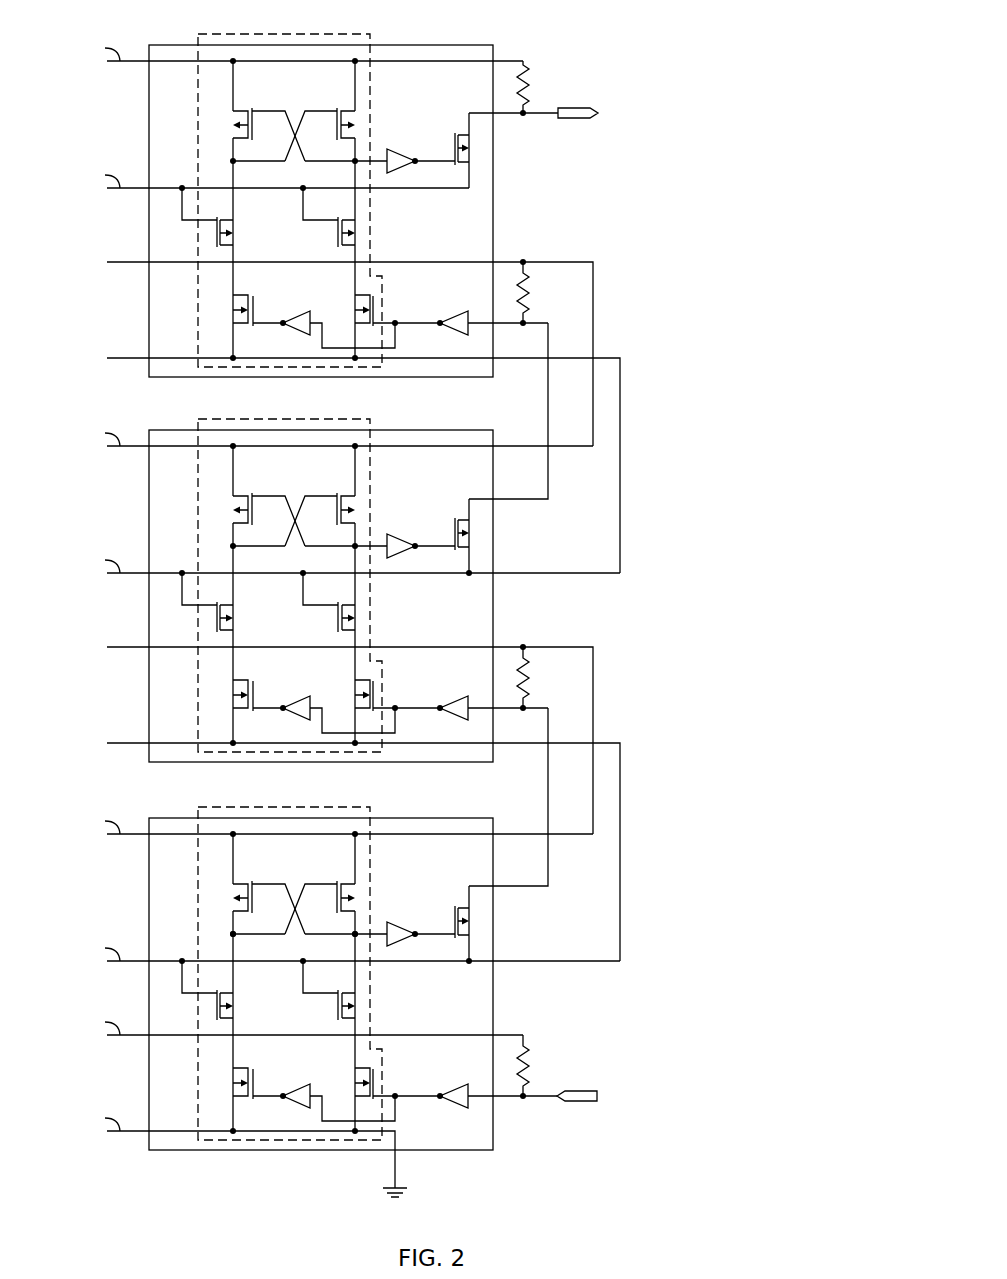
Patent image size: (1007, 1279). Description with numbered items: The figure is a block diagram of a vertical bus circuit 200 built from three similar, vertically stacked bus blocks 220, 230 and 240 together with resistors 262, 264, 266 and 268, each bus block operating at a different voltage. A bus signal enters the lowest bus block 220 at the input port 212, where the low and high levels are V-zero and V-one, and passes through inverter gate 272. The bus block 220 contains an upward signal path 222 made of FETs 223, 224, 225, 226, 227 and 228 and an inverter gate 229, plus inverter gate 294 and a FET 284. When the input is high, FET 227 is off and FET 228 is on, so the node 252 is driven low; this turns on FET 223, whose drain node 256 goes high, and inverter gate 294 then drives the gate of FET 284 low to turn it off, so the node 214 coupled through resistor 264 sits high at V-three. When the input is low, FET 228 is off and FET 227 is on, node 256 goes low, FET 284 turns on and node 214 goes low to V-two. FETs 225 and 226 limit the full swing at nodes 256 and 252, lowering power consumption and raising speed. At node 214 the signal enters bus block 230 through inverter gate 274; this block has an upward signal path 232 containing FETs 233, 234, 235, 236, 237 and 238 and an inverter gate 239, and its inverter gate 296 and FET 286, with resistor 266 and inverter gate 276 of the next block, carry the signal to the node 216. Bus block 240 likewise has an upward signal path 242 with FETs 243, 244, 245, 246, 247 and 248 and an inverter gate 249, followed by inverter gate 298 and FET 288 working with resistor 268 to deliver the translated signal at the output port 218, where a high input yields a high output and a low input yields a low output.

The vertical bus circuit 200 is at (680, 66).
The bus block 240 is at (455, 45).
The upward signal path 242 is at (351, 34).
The FET 244 is at (248, 104).
The FET 243 is at (343, 104).
The FET 246 is at (240, 234).
The FET 245 is at (367, 234).
The FET 248 is at (260, 308).
The FET 247 is at (347, 308).
The inverter gate 249 is at (298, 337).
The inverter gate 276 is at (466, 311).
The resistor 266 is at (530, 283).
The node 216 is at (527, 326).
The resistor 268 is at (529, 72).
The output port 218 is at (584, 108).
The FET 288 is at (453, 125).
The inverter gate 298 is at (390, 150).
The bus block 230 is at (455, 430).
The upward signal path 232 is at (351, 419).
The FET 234 is at (248, 489).
The FET 233 is at (343, 489).
The FET 236 is at (240, 619).
The FET 235 is at (367, 619).
The FET 238 is at (260, 693).
The FET 237 is at (347, 693).
The inverter gate 239 is at (298, 722).
The inverter gate 274 is at (466, 696).
The resistor 264 is at (530, 668).
The node 214 is at (527, 711).
The FET 286 is at (453, 510).
The inverter gate 296 is at (390, 535).
The bus block 220 is at (455, 818).
The upward signal path 222 is at (351, 807).
The FET 224 is at (248, 877).
The FET 223 is at (343, 877).
The node 252 is at (236, 937).
The node 256 is at (352, 937).
The FET 226 is at (240, 1007).
The FET 225 is at (367, 1007).
The FET 228 is at (260, 1081).
The FET 227 is at (347, 1081).
The inverter gate 229 is at (298, 1110).
The inverter gate 272 is at (466, 1084).
The resistor 262 is at (530, 1056).
The input port 212 is at (587, 1091).
The FET 284 is at (453, 898).
The inverter gate 294 is at (390, 923).